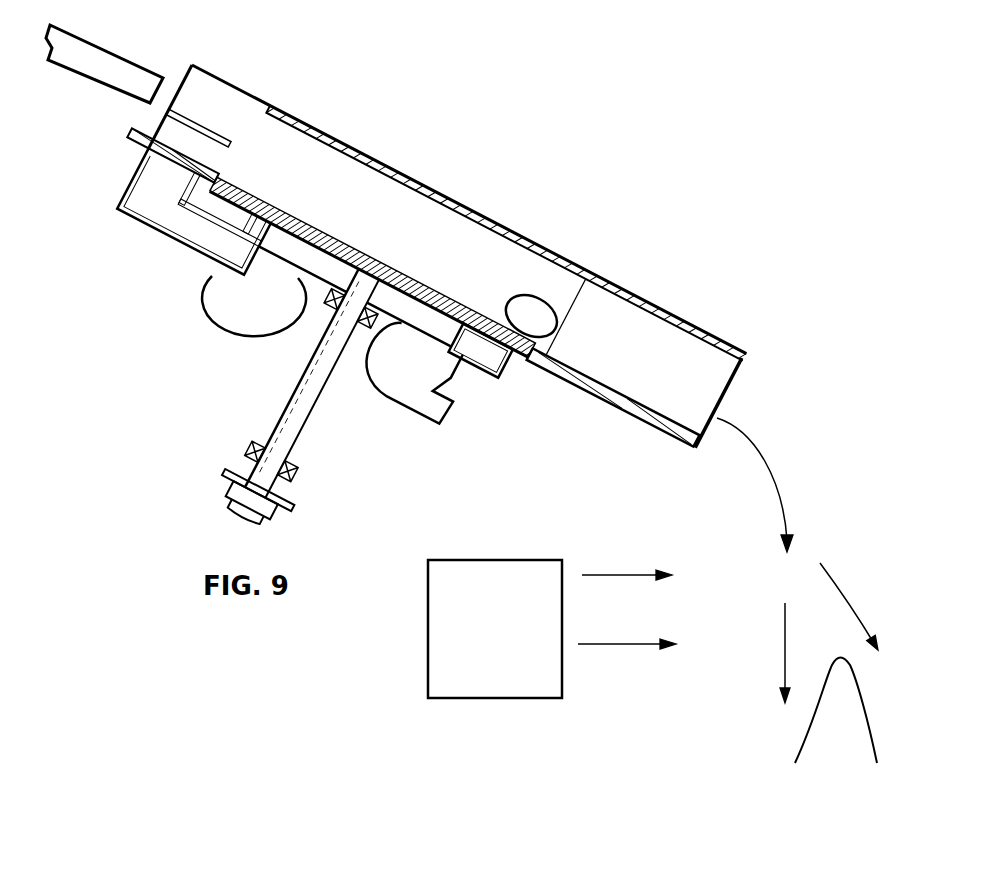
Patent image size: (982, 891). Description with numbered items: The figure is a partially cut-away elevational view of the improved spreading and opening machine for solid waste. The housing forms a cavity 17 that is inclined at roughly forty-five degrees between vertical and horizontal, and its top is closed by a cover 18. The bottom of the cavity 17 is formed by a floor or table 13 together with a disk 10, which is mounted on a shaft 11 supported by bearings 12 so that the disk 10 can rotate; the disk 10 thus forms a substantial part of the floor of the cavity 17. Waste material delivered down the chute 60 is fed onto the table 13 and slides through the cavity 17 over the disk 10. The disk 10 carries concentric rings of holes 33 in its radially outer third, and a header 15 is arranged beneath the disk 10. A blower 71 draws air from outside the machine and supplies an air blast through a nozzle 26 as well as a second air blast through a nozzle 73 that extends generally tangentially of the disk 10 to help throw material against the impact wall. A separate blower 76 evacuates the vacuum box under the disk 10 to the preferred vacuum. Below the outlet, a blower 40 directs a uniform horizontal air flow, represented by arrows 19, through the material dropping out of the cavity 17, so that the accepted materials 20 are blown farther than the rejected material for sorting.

The disk 10 is at (336, 239).
The shaft 11 is at (310, 424).
The bearings 12 is at (324, 310).
The table 13 is at (207, 168).
The header 15 is at (159, 233).
The cavity 17 is at (337, 187).
The cover 18 is at (413, 178).
The arrows 19 is at (603, 574).
The accepted materials 20 is at (862, 600).
The nozzle 26 is at (199, 128).
The holes 33 is at (249, 194).
The blower 40 is at (496, 641).
The chute 60 is at (113, 62).
The blower 71 is at (246, 336).
The nozzle 73 is at (519, 298).
The blower 76 is at (391, 399).